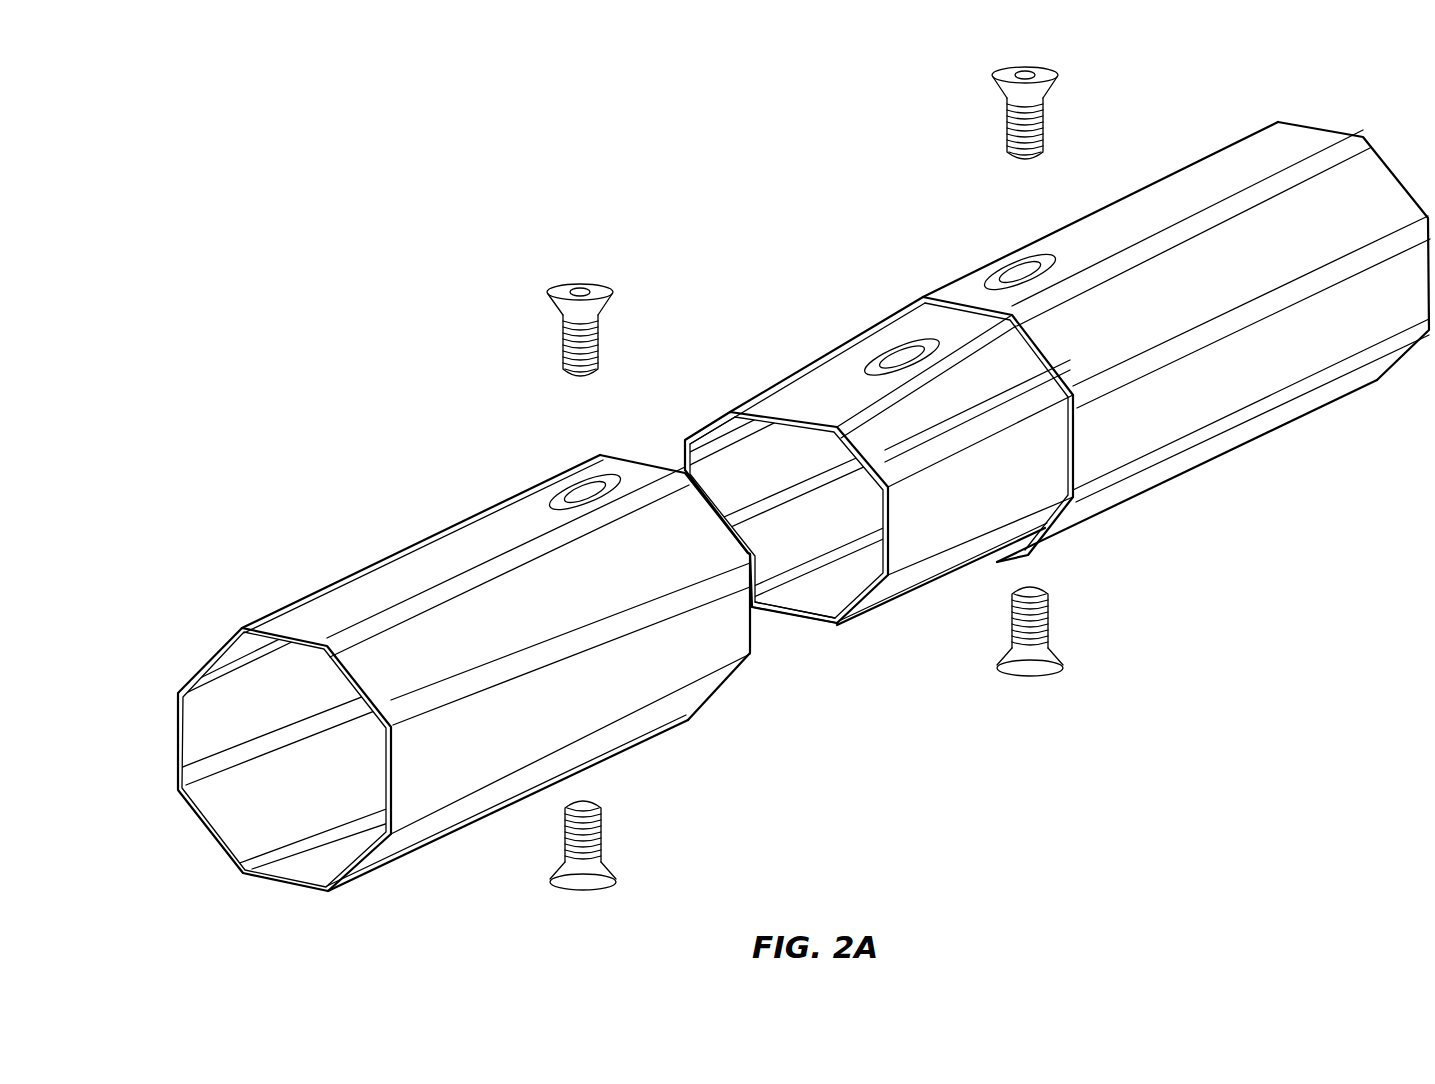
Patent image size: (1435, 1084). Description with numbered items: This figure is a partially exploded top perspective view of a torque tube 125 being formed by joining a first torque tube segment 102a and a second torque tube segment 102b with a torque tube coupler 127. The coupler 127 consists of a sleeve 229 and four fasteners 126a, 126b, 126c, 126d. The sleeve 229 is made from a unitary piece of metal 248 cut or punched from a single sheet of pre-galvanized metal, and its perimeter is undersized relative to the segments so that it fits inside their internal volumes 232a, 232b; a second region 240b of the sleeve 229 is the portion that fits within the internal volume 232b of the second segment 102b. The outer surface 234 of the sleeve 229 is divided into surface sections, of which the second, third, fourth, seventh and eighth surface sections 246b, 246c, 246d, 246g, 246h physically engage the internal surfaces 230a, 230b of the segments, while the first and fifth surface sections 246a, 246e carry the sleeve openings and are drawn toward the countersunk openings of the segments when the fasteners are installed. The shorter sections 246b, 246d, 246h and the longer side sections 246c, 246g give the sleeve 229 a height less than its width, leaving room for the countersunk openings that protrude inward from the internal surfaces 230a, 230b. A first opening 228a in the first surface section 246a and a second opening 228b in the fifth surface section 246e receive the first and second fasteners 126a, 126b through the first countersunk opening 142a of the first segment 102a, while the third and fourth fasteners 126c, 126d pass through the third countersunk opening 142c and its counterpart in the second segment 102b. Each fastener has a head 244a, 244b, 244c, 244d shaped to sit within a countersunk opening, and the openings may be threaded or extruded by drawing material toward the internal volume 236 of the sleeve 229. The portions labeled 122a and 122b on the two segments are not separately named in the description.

The torque tube 125 is at (168, 90).
The torque tube coupler 127 is at (443, 227).
The first torque tube segment 102a is at (1176, 363).
The second torque tube segment 102b is at (443, 662).
The first tube body 122a is at (1222, 392).
The second tube body 122b is at (667, 658).
The internal surface of first torque tube segment 230a is at (1038, 548).
The internal surface of second torque tube segment 230b is at (232, 700).
The internal volume of first torque tube segment 232a is at (1007, 560).
The internal volume of second torque tube segment 232b is at (196, 742).
The first countersunk opening 142a is at (1012, 262).
The third countersunk opening 142c is at (562, 488).
The first fastener 126a is at (1008, 132).
The second fastener 126b is at (1050, 622).
The third fastener 126c is at (562, 345).
The fourth fastener 126d is at (603, 815).
The head of first fastener 244a is at (996, 100).
The head of second fastener 244b is at (1066, 643).
The head of third fastener 244c is at (551, 317).
The head of fourth fastener 244d is at (620, 840).
The first opening 228a is at (875, 345).
The second opening 228b is at (873, 550).
The sleeve 229 is at (818, 360).
The outer surface of sleeve 234 is at (897, 342).
The first surface section 246a is at (775, 385).
The second surface section 246b is at (1040, 468).
The third surface section 246c is at (1040, 500).
The fourth surface section 246d is at (900, 612).
The fifth surface section 246e is at (797, 622).
The seventh surface section 246g is at (660, 462).
The eighth surface section 246h is at (700, 425).
The unitary piece of metal 248 is at (880, 590).
The second region of sleeve 240b is at (893, 610).
The internal volume of sleeve 236 is at (872, 608).